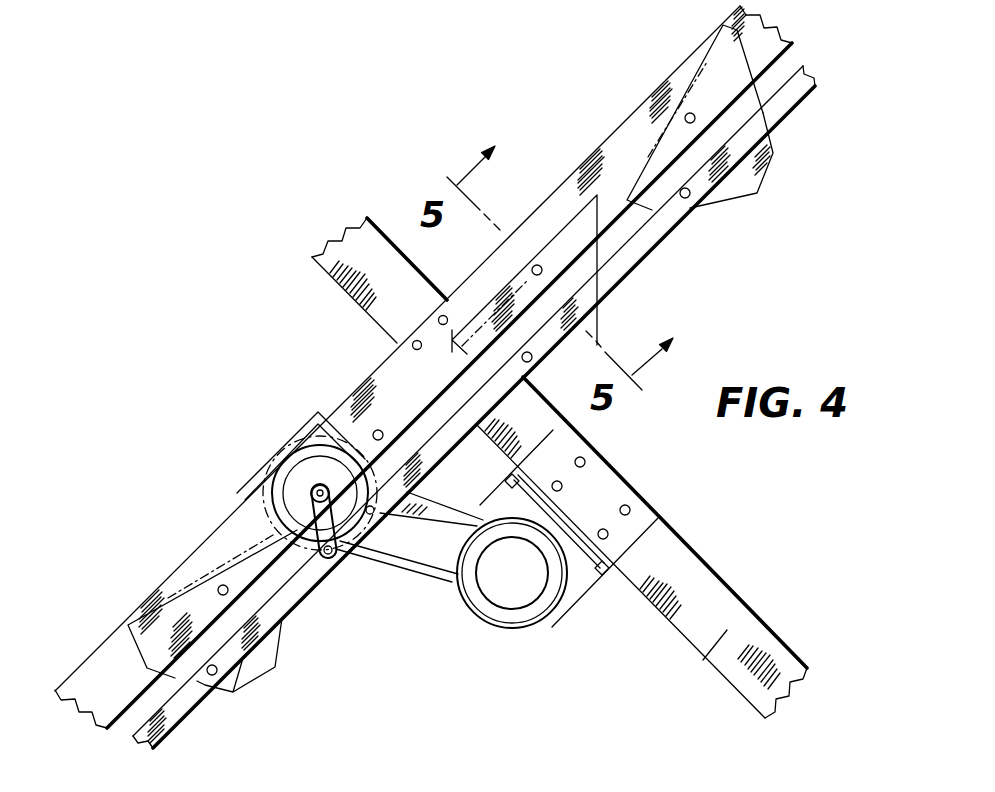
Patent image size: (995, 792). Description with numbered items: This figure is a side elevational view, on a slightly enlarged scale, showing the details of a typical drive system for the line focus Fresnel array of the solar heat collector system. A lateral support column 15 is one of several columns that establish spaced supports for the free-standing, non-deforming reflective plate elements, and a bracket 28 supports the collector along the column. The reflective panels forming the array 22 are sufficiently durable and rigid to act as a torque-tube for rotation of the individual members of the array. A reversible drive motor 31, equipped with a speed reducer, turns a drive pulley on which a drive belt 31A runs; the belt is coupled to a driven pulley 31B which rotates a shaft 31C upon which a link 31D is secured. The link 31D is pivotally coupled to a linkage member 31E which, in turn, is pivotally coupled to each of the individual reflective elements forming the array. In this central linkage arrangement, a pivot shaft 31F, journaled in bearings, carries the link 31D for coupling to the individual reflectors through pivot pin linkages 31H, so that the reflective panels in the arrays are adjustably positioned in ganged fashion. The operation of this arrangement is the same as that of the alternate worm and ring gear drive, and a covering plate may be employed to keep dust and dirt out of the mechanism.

The lateral support column 15 is at (624, 122).
The reflective panel array 22 is at (188, 590).
The bracket 28 is at (352, 233).
The drive motor 31 is at (492, 628).
The drive belt 31A is at (410, 578).
The driven pulley 31B is at (300, 455).
The shaft 31C is at (311, 487).
The link 31D is at (322, 560).
The linkage member 31E is at (192, 702).
The pivot shaft 31F is at (687, 113).
The pivot pin linkage 31H is at (688, 198).